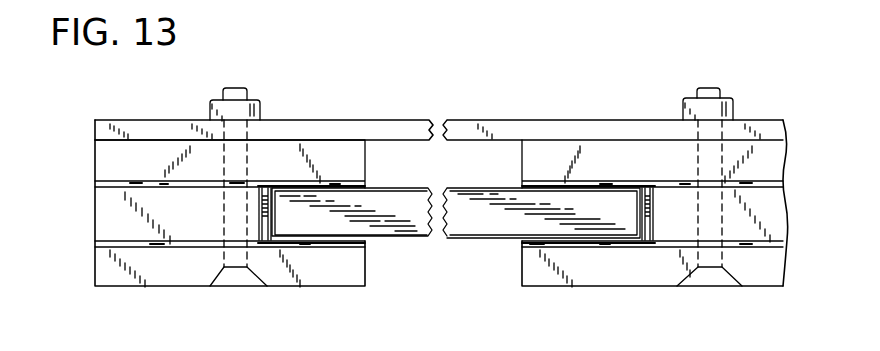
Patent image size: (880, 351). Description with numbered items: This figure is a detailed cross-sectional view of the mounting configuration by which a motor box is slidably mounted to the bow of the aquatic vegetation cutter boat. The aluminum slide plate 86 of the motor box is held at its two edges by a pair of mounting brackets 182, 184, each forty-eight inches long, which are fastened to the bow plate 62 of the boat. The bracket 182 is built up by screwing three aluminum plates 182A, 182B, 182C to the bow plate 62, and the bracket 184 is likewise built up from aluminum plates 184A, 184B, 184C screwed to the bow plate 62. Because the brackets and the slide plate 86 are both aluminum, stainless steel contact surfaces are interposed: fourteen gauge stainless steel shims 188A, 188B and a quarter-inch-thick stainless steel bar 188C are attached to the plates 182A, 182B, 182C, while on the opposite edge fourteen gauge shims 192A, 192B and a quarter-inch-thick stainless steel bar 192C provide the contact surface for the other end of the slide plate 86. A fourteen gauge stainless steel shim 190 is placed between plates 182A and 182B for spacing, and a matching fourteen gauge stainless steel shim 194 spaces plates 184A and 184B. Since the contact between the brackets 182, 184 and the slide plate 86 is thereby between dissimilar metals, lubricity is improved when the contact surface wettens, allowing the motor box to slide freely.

The bow plate 62 is at (400, 134).
The slide plate 86 is at (398, 240).
The mounting bracket 182 is at (191, 229).
The aluminum plate 182A is at (104, 152).
The aluminum plate 182B is at (107, 210).
The aluminum plate 182C is at (108, 265).
The mounting bracket 184 is at (696, 222).
The aluminum plate 184A is at (780, 160).
The aluminum plate 184B is at (780, 216).
The aluminum plate 184C is at (792, 274).
The stainless steel shim 188A is at (288, 182).
The stainless steel shim 188B is at (318, 255).
The stainless steel bar 188C is at (259, 191).
The stainless steel shim 190 is at (158, 185).
The shim 192A is at (615, 182).
The shim 192B is at (620, 246).
The stainless steel bar 192C is at (646, 197).
The stainless steel shim 194 is at (735, 182).